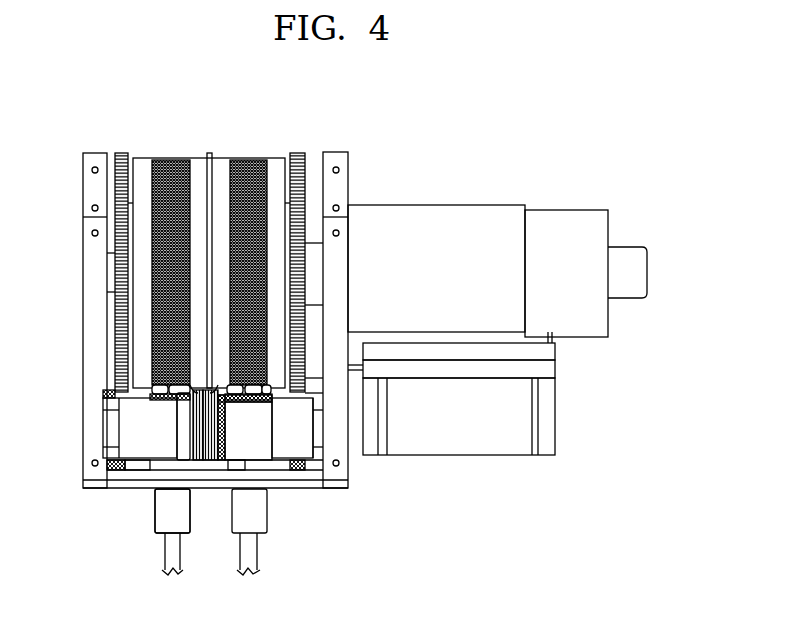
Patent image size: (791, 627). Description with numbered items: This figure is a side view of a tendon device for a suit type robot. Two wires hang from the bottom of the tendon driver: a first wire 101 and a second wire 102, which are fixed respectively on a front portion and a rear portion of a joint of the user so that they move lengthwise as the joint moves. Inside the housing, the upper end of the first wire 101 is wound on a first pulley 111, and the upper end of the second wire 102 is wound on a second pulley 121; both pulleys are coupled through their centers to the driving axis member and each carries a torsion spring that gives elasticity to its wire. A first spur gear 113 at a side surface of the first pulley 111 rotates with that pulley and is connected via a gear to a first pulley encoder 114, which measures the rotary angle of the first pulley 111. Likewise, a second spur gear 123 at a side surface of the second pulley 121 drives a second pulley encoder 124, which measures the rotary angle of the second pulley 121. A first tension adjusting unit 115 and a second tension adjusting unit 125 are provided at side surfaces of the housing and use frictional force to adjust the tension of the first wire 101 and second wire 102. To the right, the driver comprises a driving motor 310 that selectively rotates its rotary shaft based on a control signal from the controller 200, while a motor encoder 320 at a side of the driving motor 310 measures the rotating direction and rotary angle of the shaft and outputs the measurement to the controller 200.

The first wire 101 is at (250, 160).
The second wire 102 is at (167, 160).
The first pulley 111 is at (276, 162).
The first spur gear 113 is at (300, 155).
The first pulley encoder 114 is at (297, 437).
The first tension adjusting unit 115 is at (257, 445).
The second pulley 121 is at (200, 170).
The second spur gear 123 is at (119, 151).
The second pulley encoder 124 is at (142, 429).
The second tension adjusting unit 125 is at (162, 506).
The controller 200 is at (510, 432).
The driving motor 310 is at (563, 223).
The motor encoder 320 is at (625, 267).